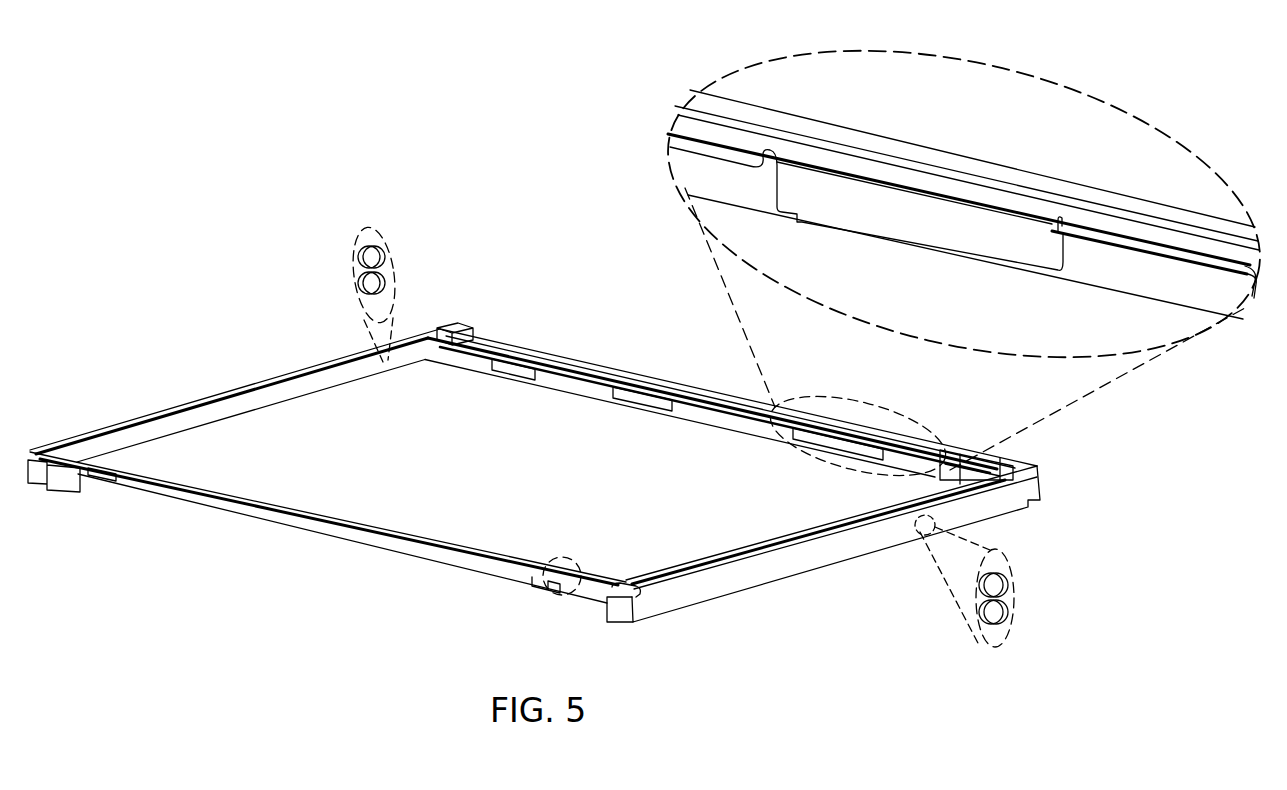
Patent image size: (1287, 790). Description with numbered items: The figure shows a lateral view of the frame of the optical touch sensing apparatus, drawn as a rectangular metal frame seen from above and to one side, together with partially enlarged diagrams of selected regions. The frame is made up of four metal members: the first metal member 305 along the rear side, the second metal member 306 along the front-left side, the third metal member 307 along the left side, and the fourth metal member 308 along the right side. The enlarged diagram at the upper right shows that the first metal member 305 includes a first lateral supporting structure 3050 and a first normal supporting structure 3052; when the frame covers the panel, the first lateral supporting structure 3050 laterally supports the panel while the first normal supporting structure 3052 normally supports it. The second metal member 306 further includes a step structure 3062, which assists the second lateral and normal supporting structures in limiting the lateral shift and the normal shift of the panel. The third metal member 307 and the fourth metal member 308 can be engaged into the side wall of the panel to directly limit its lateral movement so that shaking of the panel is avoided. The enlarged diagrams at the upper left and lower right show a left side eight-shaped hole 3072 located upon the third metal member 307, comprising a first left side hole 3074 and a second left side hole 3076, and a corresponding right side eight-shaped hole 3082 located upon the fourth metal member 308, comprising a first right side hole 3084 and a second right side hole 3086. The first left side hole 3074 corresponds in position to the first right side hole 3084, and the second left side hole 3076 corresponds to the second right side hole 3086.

The first metal member 305 is at (545, 352).
The second metal member 306 is at (396, 528).
The third metal member 307 is at (273, 407).
The fourth metal member 308 is at (800, 572).
The first lateral supporting structure 3050 is at (890, 205).
The first normal supporting structure 3052 is at (1123, 252).
The step structure 3062 is at (548, 587).
The left side 8-shaped hole 3072 is at (398, 376).
The first left side hole 3074 is at (385, 244).
The second left side hole 3076 is at (388, 275).
The right side 8-shaped hole 3082 is at (915, 525).
The first right side hole 3084 is at (1003, 575).
The second right side hole 3086 is at (1005, 607).